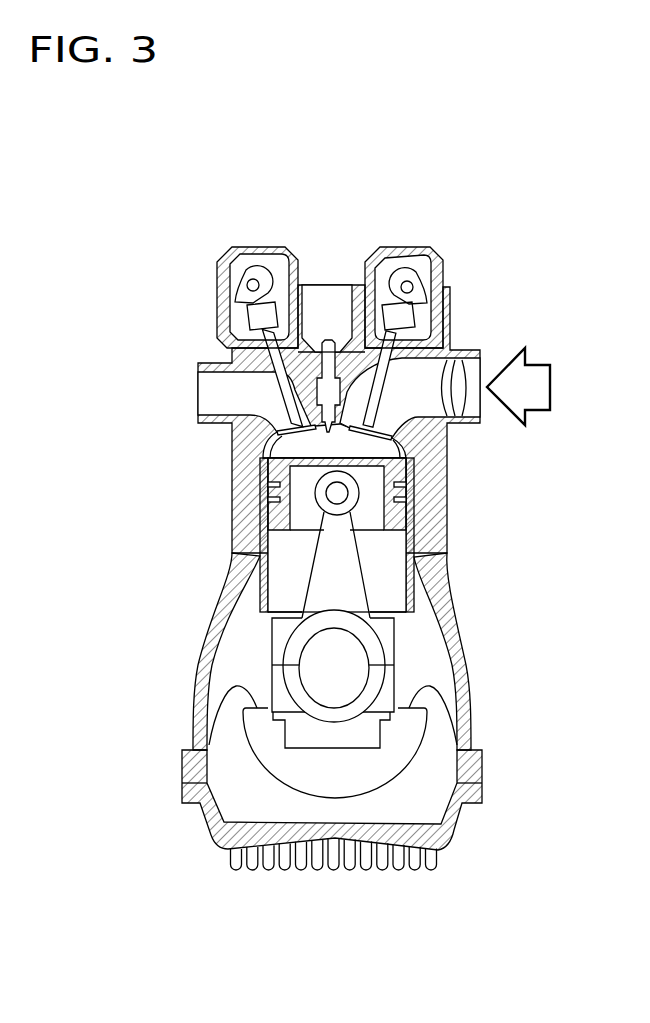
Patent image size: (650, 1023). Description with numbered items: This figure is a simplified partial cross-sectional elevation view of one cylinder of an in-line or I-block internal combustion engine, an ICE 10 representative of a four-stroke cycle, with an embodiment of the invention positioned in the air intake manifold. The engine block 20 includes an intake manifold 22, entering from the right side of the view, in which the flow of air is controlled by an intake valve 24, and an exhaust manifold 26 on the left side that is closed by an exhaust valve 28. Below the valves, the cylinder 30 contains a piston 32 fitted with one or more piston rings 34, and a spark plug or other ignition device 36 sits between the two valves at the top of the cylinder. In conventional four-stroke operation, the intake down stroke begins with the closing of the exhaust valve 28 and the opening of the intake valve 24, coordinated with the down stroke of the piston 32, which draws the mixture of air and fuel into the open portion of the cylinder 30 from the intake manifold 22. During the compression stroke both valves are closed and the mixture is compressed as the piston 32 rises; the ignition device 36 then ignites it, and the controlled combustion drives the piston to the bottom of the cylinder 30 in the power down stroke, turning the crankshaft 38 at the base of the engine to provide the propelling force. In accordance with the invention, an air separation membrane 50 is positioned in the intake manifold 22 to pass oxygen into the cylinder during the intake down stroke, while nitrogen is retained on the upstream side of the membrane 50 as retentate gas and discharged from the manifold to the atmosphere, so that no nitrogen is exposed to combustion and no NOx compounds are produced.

The ICE 10 is at (145, 250).
The engine block 20 is at (468, 723).
The intake manifold 22 is at (475, 372).
The intake valve 24 is at (395, 440).
The exhaust manifold 26 is at (240, 383).
The exhaust valve 28 is at (262, 394).
The cylinder 30 is at (387, 535).
The piston 32 is at (268, 503).
The piston rings 34 is at (407, 485).
The spark plug or other ignition device 36 is at (327, 340).
The crankshaft 38 is at (328, 663).
The air separation membrane 50 is at (457, 367).